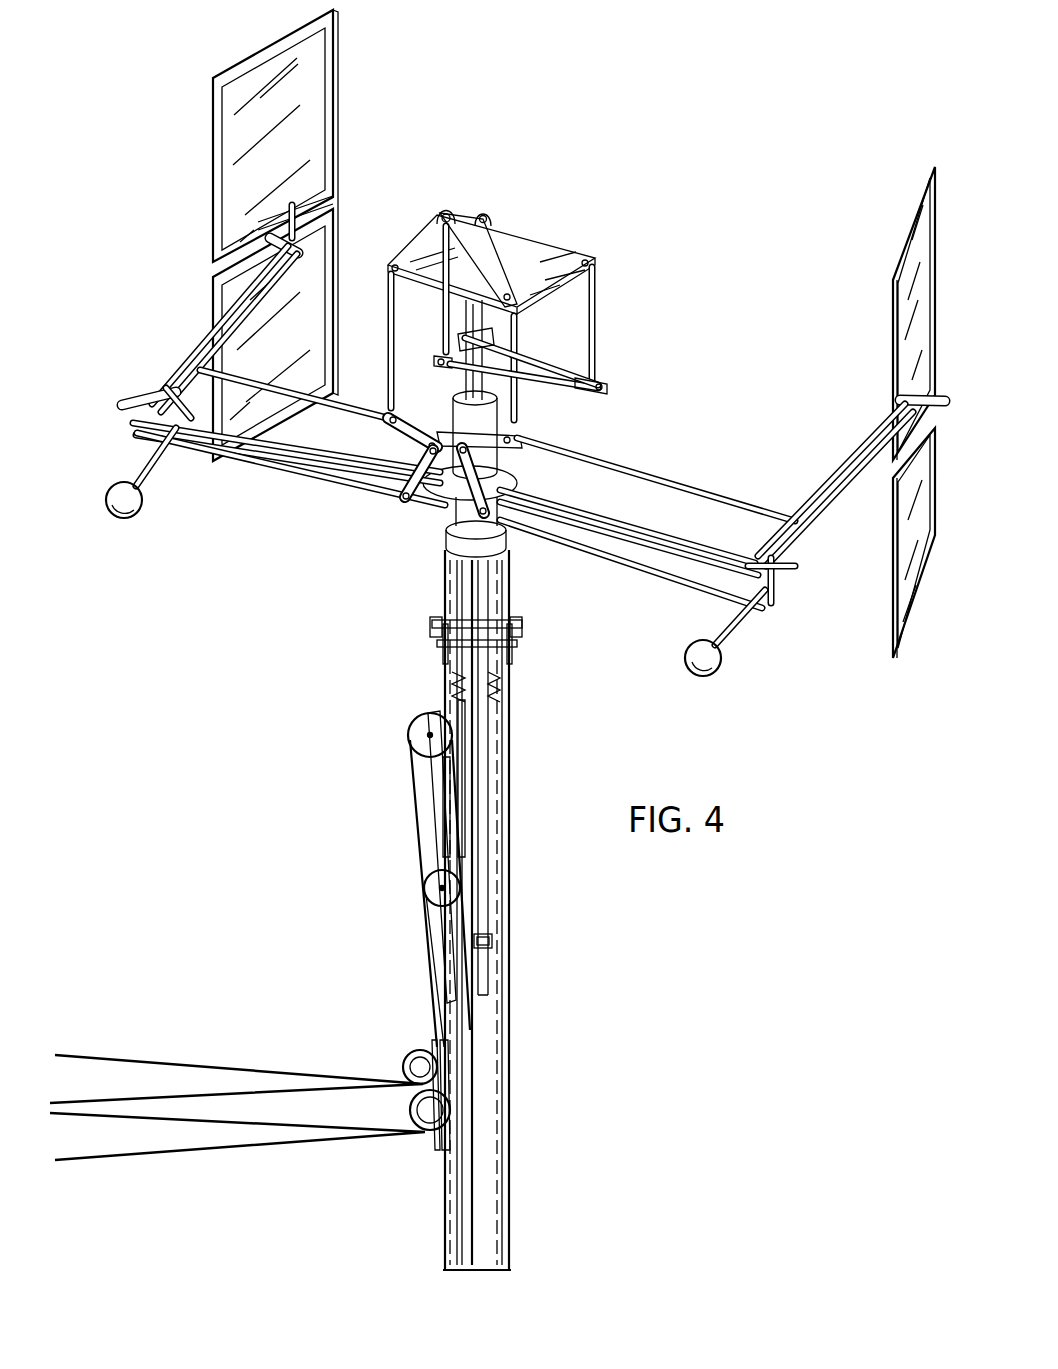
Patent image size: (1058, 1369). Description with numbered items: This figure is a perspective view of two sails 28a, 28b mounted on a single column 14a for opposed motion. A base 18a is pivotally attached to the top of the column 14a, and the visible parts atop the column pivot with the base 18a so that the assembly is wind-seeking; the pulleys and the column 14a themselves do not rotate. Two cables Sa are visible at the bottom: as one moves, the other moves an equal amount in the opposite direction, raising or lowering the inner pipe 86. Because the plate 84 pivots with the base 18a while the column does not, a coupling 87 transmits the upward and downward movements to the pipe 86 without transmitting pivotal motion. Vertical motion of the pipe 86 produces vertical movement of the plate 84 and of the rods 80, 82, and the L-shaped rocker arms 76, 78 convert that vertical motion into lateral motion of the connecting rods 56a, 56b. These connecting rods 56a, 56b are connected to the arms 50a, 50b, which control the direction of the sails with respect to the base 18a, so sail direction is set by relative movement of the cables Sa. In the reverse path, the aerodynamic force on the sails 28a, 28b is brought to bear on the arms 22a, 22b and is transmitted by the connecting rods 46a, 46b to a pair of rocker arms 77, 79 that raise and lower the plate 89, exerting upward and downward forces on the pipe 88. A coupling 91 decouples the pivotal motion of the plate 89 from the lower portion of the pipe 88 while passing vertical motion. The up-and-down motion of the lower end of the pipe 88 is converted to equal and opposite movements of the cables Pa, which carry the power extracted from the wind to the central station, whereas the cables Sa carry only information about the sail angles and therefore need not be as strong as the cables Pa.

The column 14a is at (508, 780).
The base 18a is at (361, 458).
The first arm 22a is at (200, 356).
The second arm 22b is at (866, 454).
The sail 28a is at (336, 57).
The sail 28b is at (897, 230).
The connecting rod 46a is at (372, 410).
The connecting rod 46b is at (718, 497).
The arm 50a is at (135, 428).
The arm 50b is at (779, 590).
The connecting rod 56a is at (262, 468).
The connecting rod 56b is at (670, 583).
The L-shaped rocker arm 76 is at (412, 502).
The rocker arm 77 is at (440, 358).
The L-shaped rocker arm 78 is at (503, 541).
The rocker arm 79 is at (582, 386).
The rod 80 is at (390, 299).
The rod 82 is at (516, 343).
The plate 84 is at (428, 230).
The inner pipe 86 is at (512, 334).
The coupling 87 is at (492, 943).
The pipe 88 is at (470, 384).
The plate 89 is at (500, 236).
The coupling 91 is at (492, 698).
The cables Pa is at (64, 1055).
The cables Sa is at (64, 1110).